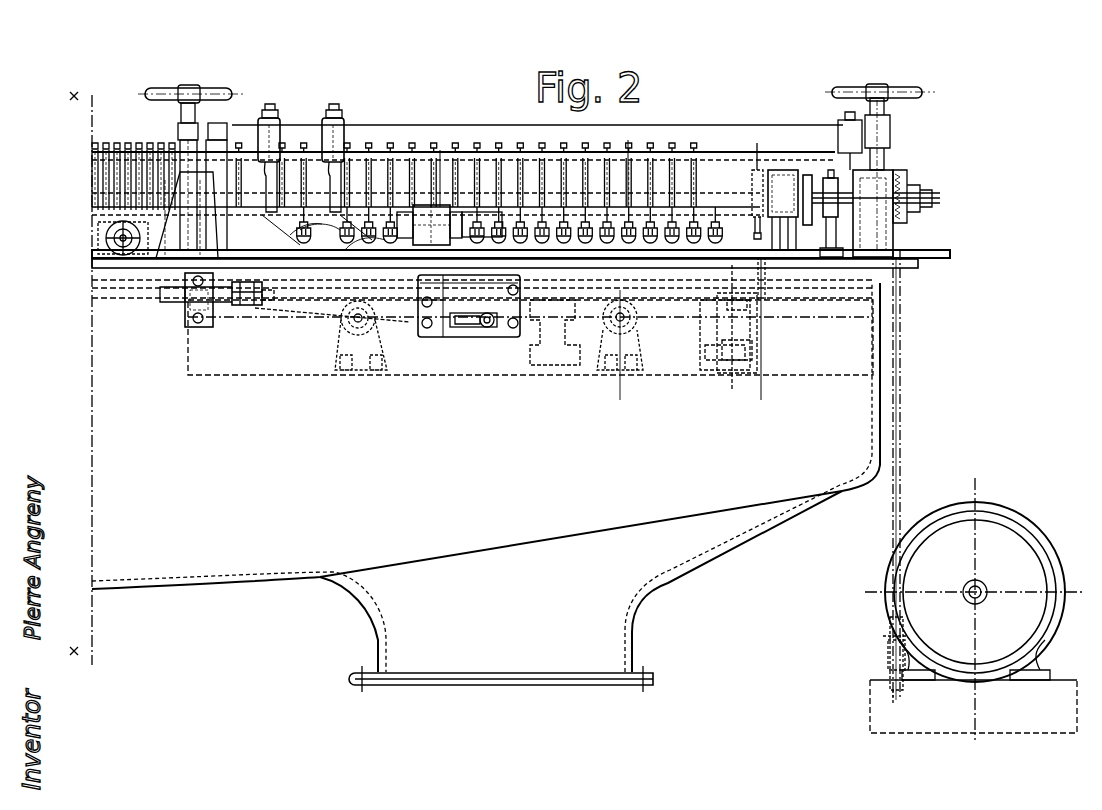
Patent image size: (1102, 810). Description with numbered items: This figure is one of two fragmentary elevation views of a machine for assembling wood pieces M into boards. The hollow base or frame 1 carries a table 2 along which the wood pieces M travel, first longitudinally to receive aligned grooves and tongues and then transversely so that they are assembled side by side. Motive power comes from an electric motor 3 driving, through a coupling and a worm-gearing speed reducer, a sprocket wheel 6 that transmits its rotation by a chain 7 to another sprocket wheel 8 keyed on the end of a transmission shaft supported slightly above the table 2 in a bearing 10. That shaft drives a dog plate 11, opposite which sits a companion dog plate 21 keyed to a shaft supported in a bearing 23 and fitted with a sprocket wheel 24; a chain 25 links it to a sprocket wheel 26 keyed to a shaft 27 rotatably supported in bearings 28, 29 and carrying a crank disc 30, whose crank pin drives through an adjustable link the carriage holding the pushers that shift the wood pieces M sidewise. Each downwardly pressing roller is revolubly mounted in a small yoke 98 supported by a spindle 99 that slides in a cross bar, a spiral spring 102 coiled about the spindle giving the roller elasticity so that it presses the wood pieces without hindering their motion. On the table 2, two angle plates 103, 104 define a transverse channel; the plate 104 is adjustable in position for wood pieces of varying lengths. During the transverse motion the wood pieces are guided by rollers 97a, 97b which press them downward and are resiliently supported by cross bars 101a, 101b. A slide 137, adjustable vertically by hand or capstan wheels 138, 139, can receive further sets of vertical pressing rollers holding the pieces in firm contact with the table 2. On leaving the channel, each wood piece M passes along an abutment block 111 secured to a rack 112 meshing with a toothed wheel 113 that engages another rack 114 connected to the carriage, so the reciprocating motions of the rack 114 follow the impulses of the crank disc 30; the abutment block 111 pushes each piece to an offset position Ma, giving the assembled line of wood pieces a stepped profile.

The base or frame 1 is at (708, 562).
The table 2 is at (918, 267).
The electric motor 3 is at (1008, 552).
The sprocket wheel 6 is at (887, 665).
The chain 7 is at (905, 394).
The sprocket wheel 8 is at (900, 180).
The bearing 10 is at (853, 175).
The dog plate 11 is at (810, 173).
The companion dog plate 21 is at (802, 175).
The bearing 23 is at (783, 170).
The sprocket wheel 24 is at (757, 170).
The chain 25 is at (760, 270).
The sprocket wheel 26 is at (763, 343).
The shaft 27 is at (676, 322).
The bearing 28 is at (708, 345).
The bearing 29 is at (548, 360).
The crank disc 30 is at (508, 362).
The roller 97a is at (190, 287).
The roller 97b is at (330, 252).
The small yoke 98 is at (712, 215).
The spindle 99 is at (273, 217).
The cross bar 101a is at (272, 150).
The cross bar 101b is at (340, 150).
The spiral spring 102 is at (457, 170).
The angle plate 103 is at (162, 240).
The angle plate 104 is at (381, 212).
The abutment block 111 is at (255, 270).
The rack 112 is at (393, 300).
The toothed wheel 113 is at (455, 337).
The rack 114 is at (492, 337).
The slide 137 is at (634, 140).
The hand or capstan wheel 138 is at (178, 92).
The hand or capstan wheel 139 is at (920, 93).
The wood piece M is at (246, 300).
The offset position Ma is at (275, 262).